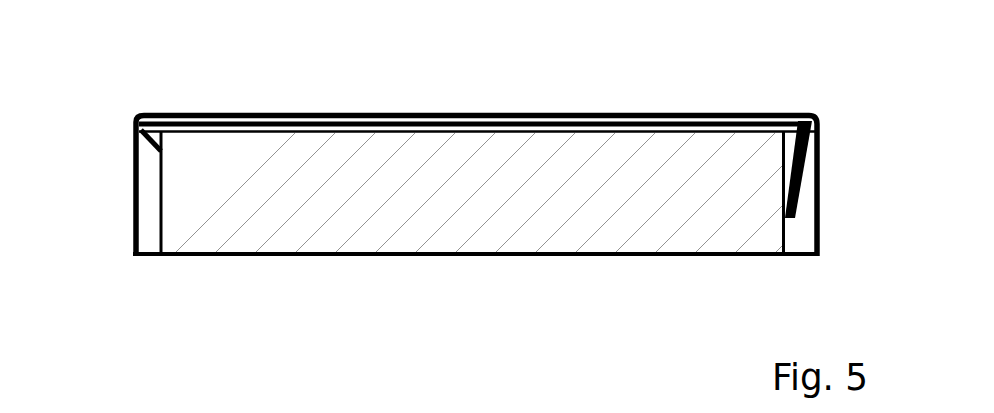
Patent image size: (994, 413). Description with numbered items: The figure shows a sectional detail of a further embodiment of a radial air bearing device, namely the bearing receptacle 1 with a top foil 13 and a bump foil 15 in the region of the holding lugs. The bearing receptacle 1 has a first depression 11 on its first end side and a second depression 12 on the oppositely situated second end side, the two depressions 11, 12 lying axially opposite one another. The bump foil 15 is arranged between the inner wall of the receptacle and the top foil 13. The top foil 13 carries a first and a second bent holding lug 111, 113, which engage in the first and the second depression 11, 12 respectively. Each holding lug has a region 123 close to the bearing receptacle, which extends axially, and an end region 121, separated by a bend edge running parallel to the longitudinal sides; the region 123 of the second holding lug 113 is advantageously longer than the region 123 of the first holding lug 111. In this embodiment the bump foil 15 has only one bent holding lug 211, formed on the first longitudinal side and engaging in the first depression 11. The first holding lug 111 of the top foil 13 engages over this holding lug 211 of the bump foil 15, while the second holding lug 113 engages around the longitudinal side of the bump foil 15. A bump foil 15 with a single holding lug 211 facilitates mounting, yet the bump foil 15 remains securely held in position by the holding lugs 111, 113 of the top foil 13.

The bearing receptacle 1 is at (505, 205).
The first depression 11 is at (802, 232).
The second depression 12 is at (149, 225).
The top foil 13 is at (492, 113).
The bump foil 15 is at (595, 121).
The first holding lug 111 is at (817, 158).
The second holding lug 113 is at (147, 143).
The end region 121 is at (153, 150).
The region close to the bearing receptacle 123 is at (151, 112).
The first holding lug of the bump foil 211 is at (814, 142).